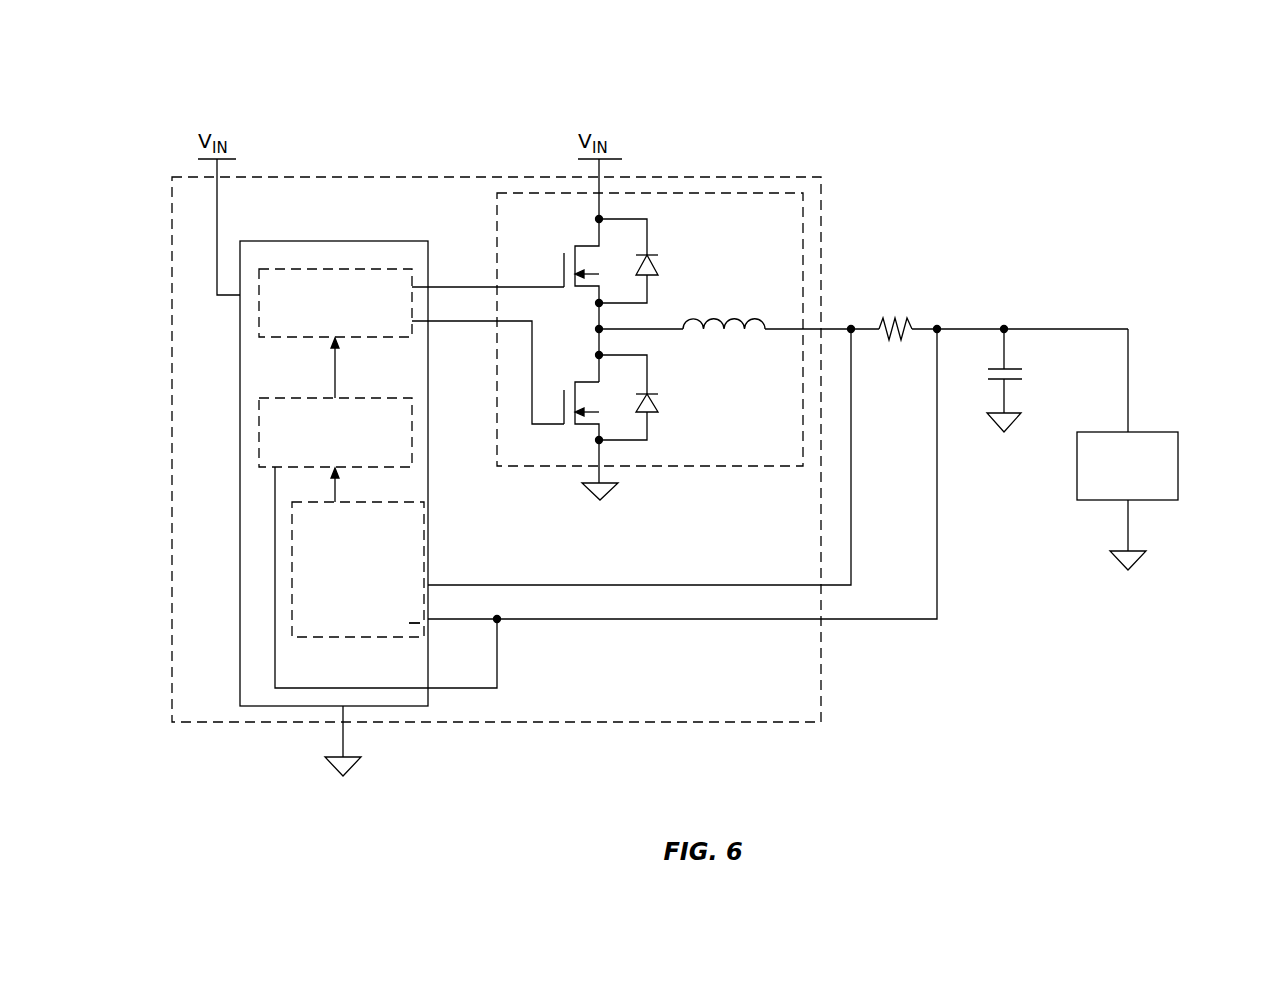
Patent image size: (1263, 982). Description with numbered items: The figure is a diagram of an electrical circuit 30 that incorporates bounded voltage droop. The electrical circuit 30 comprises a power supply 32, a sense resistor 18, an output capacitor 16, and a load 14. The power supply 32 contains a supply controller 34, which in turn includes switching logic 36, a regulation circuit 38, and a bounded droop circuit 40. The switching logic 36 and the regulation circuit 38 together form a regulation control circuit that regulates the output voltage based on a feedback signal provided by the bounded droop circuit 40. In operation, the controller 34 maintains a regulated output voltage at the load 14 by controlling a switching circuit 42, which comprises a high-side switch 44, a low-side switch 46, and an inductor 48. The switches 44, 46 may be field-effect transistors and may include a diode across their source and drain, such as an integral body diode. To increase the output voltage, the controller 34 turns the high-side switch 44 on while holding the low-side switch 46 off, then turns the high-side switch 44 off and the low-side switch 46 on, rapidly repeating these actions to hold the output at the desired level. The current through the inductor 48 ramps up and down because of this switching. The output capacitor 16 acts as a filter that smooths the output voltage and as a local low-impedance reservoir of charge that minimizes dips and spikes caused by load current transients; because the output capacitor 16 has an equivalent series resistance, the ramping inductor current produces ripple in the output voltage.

The load 14 is at (1078, 460).
The output capacitor 16 is at (1027, 377).
The sense resistor 18 is at (892, 312).
The electrical circuit 30 is at (912, 96).
The power supply 32 is at (822, 193).
The supply controller 34 is at (393, 241).
The switching logic 36 is at (390, 338).
The regulation circuit 38 is at (390, 467).
The bounded droop circuit 40 is at (320, 637).
The switching circuit 42 is at (740, 466).
The high-side switch 44 is at (652, 238).
The low-side switch 46 is at (653, 372).
The inductor 48 is at (728, 313).